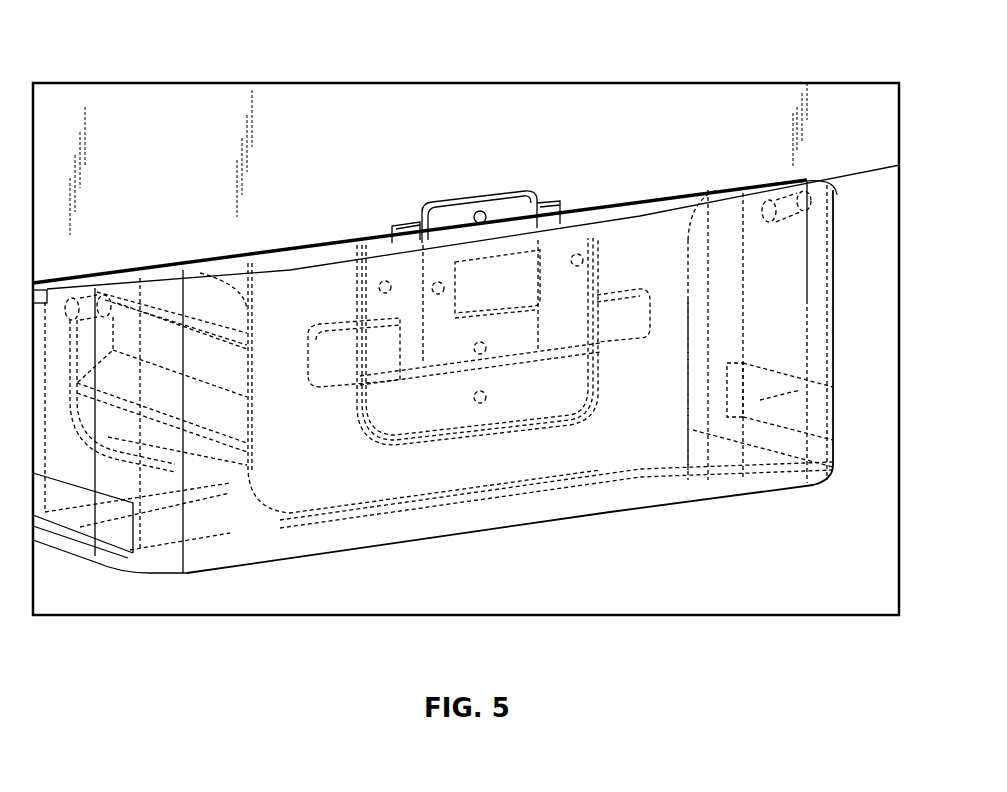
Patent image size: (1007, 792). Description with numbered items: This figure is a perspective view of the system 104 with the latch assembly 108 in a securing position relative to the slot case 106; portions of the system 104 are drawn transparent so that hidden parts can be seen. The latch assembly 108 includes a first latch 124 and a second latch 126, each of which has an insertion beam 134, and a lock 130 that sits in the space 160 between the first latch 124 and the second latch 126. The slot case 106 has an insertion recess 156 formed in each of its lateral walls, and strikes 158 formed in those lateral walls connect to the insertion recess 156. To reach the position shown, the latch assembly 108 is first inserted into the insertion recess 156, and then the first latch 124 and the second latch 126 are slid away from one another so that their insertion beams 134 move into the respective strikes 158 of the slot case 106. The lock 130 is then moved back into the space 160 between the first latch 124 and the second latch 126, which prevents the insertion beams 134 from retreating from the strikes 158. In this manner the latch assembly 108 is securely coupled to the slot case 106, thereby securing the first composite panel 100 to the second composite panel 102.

The first composite panel 100 is at (737, 120).
The second composite panel 102 is at (888, 317).
The system 104 is at (692, 294).
The slot case 106 is at (782, 410).
The latch assembly 108 is at (447, 174).
The first latch 124 is at (410, 222).
The second latch 126 is at (551, 202).
The lock 130 is at (472, 197).
The insertion beam 134 is at (343, 358).
The insertion recess 156 is at (598, 422).
The strikes 158 is at (348, 392).
The space 160 is at (515, 213).